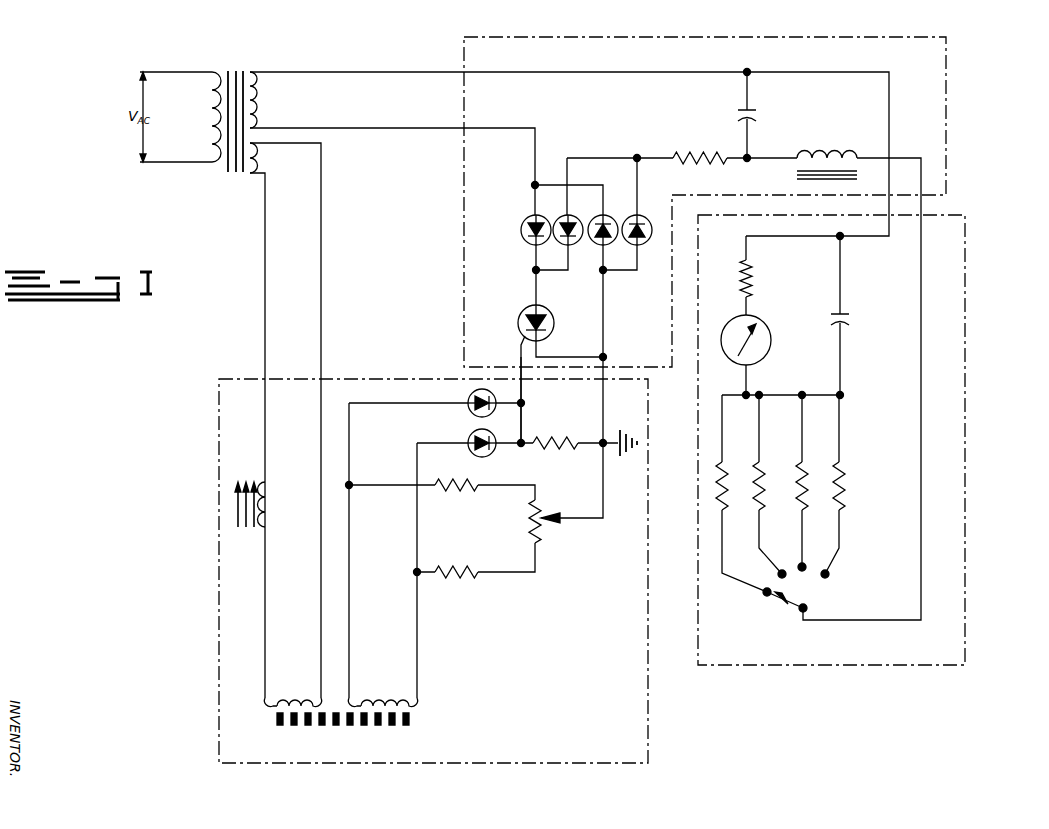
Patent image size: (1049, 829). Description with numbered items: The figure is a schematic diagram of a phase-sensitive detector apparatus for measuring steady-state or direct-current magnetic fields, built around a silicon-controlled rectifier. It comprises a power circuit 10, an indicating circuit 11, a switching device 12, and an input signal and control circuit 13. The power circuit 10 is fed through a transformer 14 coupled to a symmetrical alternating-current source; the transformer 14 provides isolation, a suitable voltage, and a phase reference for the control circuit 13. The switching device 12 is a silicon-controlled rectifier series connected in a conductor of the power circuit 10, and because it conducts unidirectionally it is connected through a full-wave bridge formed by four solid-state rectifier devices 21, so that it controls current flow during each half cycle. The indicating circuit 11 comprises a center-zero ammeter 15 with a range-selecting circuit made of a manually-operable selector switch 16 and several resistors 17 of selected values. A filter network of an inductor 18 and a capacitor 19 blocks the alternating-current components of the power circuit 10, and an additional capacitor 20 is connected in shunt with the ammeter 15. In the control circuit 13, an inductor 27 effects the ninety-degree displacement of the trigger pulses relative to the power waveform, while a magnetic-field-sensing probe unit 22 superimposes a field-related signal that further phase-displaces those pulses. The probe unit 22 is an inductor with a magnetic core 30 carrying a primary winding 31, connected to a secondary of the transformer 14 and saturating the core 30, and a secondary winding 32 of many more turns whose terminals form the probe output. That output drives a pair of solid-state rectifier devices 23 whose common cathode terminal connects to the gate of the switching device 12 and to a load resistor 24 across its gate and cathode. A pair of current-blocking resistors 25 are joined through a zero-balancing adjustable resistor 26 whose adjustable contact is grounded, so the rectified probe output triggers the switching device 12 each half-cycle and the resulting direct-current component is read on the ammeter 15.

The power circuit 10 is at (952, 96).
The indicating circuit 11 is at (970, 500).
The switching device 12 is at (519, 325).
The input signal and control circuit 13 is at (216, 580).
The transformer 14 is at (243, 68).
The ammeter 15 is at (763, 322).
The selector switch 16 is at (790, 612).
The resistors 17 is at (728, 503).
The inductor 18 is at (812, 157).
The capacitor 19 is at (760, 118).
The capacitor 20 is at (850, 313).
The solid-state rectifier devices 21 is at (528, 246).
The magnetic-field-sensing probe unit 22 is at (405, 733).
The solid-state rectifier devices 23 is at (470, 424).
The load resistor 24 is at (553, 449).
The current-blocking resistors 25 is at (455, 492).
The zero-balancing adjustable resistor 26 is at (545, 530).
The inductor 27 is at (272, 496).
The magnetic core 30 is at (310, 726).
The primary winding 31 is at (272, 698).
The secondary winding 32 is at (356, 698).